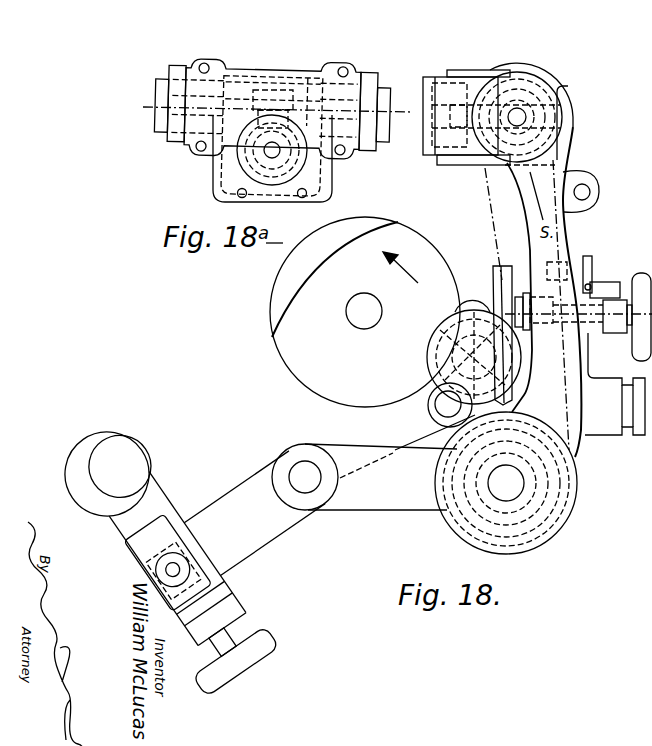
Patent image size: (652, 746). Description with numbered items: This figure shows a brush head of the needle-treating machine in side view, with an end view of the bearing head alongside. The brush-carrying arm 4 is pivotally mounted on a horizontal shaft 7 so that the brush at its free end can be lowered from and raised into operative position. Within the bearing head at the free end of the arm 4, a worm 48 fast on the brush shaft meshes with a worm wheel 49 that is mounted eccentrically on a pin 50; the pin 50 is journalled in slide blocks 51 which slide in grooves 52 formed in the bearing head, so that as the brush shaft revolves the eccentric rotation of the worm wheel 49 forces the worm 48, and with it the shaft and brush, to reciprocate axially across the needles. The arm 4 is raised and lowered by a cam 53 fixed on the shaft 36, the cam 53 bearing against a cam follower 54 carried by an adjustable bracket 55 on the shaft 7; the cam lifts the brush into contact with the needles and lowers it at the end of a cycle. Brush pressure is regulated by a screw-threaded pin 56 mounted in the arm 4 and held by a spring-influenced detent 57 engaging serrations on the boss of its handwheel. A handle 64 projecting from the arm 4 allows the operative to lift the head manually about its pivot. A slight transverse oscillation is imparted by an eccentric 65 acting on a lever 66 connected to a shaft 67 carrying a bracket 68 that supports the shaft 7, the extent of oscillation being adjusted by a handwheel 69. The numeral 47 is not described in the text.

In FIG. 18, the arm 4 is at (565, 260).
In FIG. 18, the horizontal axis shaft 7 is at (506, 483).
In FIG. 18, the shaft 36 is at (356, 300).
In FIG. 18A, the cylinder body 47 is at (300, 83).
In FIG. 18A, the worm 48 is at (270, 97).
In FIG. 18, the worm 48 is at (533, 110).
In FIG. 18A, the worm wheel 49 is at (254, 150).
In FIG. 18, the worm wheel 49 is at (455, 118).
In FIG. 18A, the pin 50 is at (300, 167).
In FIG. 18, the pin 50 is at (467, 100).
In FIG. 18A, the slide blocks 51 is at (272, 150).
In FIG. 18, the slide blocks 51 is at (490, 70).
In FIG. 18A, the grooves 52 is at (225, 157).
In FIG. 18, the cam 53 is at (365, 312).
In FIG. 18, the cam follower 54 is at (471, 298).
In FIG. 18, the adjustable bracket 55 is at (483, 401).
In FIG. 18, the screw-threaded pin 56 is at (612, 333).
In FIG. 18, the spring-influenced detent 57 is at (598, 283).
In FIG. 18, the handle 64 is at (590, 192).
In FIG. 18, the eccentric 65 is at (108, 436).
In FIG. 18, the lever 66 is at (225, 523).
In FIG. 18, the shaft 67 is at (305, 478).
In FIG. 18, the bracket 68 is at (390, 462).
In FIG. 18, the handwheel 69 is at (246, 656).